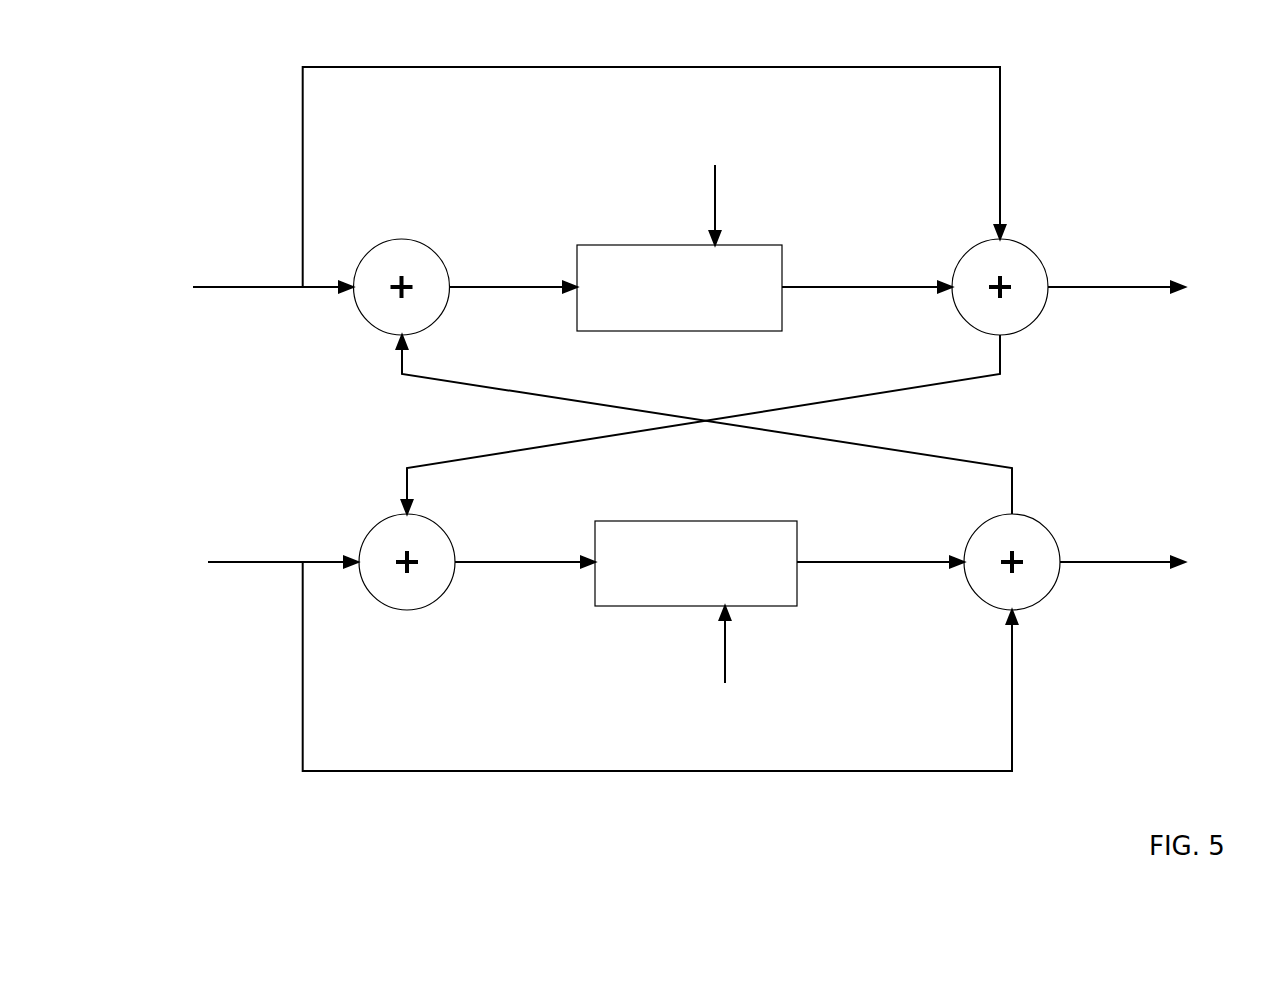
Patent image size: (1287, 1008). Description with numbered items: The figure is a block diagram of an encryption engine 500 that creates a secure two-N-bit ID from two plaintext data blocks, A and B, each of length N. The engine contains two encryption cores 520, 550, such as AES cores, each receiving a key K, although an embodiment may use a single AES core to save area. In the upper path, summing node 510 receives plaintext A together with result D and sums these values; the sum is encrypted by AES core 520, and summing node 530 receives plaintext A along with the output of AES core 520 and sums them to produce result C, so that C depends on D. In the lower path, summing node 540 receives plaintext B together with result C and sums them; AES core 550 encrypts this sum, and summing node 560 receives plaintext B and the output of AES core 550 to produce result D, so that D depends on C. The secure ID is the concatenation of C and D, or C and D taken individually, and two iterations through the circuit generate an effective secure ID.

The encryption engine 500 is at (250, 825).
The summing node 510 is at (401, 239).
The encryption core 520 is at (780, 260).
The summing node 530 is at (1017, 260).
The summing node 540 is at (427, 608).
The encryption core 550 is at (770, 606).
The summing node 560 is at (1028, 594).